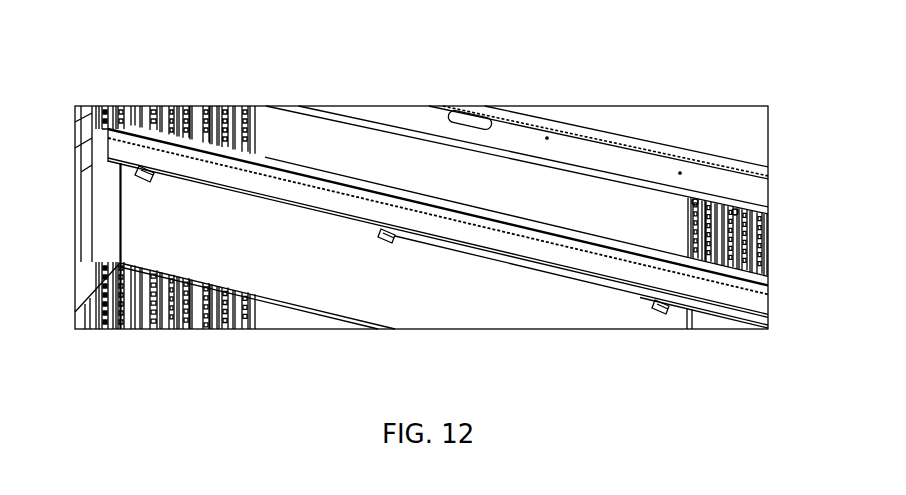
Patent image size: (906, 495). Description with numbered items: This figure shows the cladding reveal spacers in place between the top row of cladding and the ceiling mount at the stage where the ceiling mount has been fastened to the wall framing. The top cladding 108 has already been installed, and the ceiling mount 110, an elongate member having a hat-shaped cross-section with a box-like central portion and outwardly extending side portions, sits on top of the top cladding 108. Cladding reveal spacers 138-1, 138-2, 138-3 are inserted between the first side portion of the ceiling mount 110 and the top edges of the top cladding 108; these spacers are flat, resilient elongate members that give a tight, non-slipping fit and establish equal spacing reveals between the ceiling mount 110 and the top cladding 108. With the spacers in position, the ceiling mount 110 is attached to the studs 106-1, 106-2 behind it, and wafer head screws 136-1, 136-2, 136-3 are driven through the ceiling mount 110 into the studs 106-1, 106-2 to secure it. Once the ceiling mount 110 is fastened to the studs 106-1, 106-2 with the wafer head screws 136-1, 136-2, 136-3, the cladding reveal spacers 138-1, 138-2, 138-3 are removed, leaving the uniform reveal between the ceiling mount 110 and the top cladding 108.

The stud 106-1 is at (180, 97).
The stud 106-2 is at (762, 248).
The top cladding 108 is at (128, 258).
The ceiling mount 110 is at (287, 192).
The wafer head screw 136-1 is at (126, 107).
The wafer head screw 136-2 is at (225, 107).
The wafer head screw 136-3 is at (625, 243).
The cladding reveal spacer 138-1 is at (140, 170).
The cladding reveal spacer 138-2 is at (385, 243).
The cladding reveal spacer 138-3 is at (660, 312).